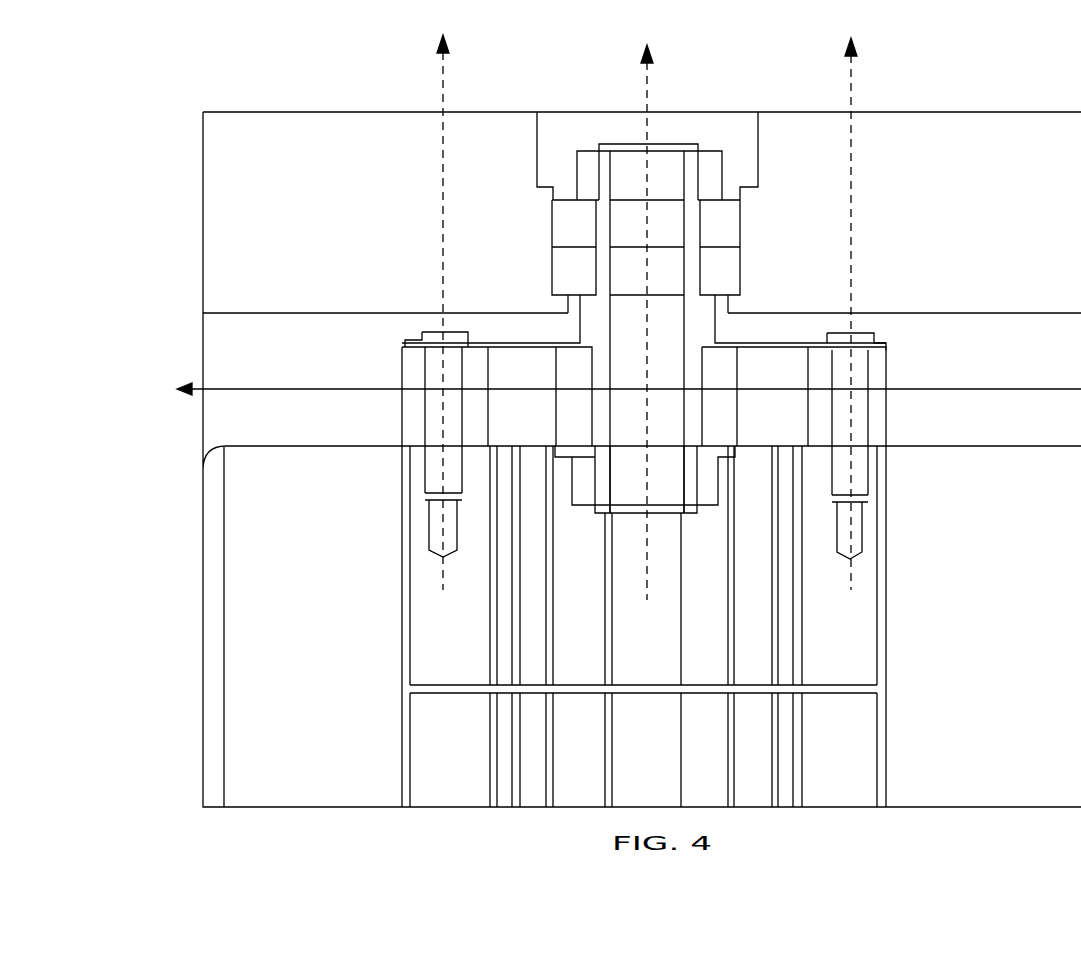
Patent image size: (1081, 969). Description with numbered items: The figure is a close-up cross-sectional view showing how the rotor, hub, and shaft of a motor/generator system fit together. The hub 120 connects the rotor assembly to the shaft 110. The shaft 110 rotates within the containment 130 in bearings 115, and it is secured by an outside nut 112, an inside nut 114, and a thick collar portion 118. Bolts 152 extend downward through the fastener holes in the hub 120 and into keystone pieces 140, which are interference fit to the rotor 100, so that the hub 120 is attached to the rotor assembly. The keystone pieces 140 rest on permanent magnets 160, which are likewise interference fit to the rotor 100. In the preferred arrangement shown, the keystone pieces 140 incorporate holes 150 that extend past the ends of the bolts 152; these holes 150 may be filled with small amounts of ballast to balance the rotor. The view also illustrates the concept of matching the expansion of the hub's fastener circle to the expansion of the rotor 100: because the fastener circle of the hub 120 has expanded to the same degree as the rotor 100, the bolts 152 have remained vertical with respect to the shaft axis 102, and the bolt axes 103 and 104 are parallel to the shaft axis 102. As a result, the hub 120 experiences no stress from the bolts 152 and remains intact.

The rotor 100 is at (316, 653).
The shaft axis 102 is at (649, 73).
The bolt axis 103 is at (444, 68).
The bolt axis 104 is at (852, 70).
The shaft 110 is at (625, 167).
The outside nut 112 is at (708, 158).
The inside nut 114 is at (718, 485).
The bearings 115 is at (551, 213).
The thick collar portion 118 is at (707, 325).
The hub 120 is at (522, 362).
The containment 130 is at (951, 201).
The keystone pieces 140 is at (466, 653).
The holes 150 is at (457, 532).
The bolts 152 is at (423, 472).
The permanent magnets 160 is at (466, 753).